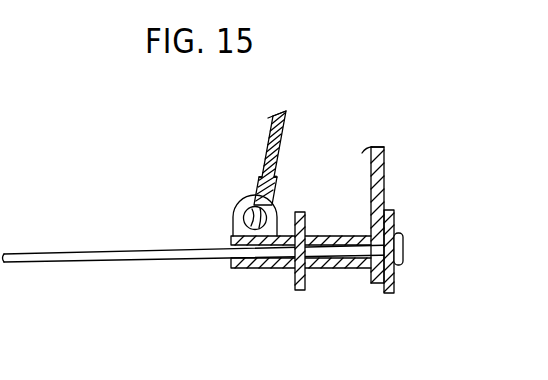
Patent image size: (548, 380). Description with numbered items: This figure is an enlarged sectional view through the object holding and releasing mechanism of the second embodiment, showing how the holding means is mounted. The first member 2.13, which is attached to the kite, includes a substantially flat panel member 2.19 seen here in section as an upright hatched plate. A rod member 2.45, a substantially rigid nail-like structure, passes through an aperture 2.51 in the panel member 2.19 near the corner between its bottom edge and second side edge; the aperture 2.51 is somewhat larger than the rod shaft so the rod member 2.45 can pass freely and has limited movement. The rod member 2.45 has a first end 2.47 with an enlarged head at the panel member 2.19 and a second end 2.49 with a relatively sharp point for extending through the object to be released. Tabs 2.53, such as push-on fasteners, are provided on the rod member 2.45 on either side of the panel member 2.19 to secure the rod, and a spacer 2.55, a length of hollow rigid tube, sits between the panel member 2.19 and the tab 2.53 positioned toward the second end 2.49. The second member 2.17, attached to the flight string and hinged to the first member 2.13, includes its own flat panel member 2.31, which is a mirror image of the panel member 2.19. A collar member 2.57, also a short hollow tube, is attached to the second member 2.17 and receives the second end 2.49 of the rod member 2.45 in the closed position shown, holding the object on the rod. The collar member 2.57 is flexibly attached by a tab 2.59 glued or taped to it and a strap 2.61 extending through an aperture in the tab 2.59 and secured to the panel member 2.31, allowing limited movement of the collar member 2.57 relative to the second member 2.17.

The first member 2.13 is at (424, 179).
The second member 2.17 is at (258, 157).
The panel member 2.19 is at (410, 131).
The panel member 2.31 is at (269, 137).
The rod member 2.45 is at (153, 262).
The first end 2.47 is at (400, 262).
The second end 2.49 is at (10, 253).
The aperture 2.51 is at (366, 266).
The tabs 2.53 is at (296, 286).
The spacer 2.55 is at (340, 237).
The collar member 2.57 is at (233, 274).
The tab 2.59 is at (234, 220).
The strap 2.61 is at (259, 183).